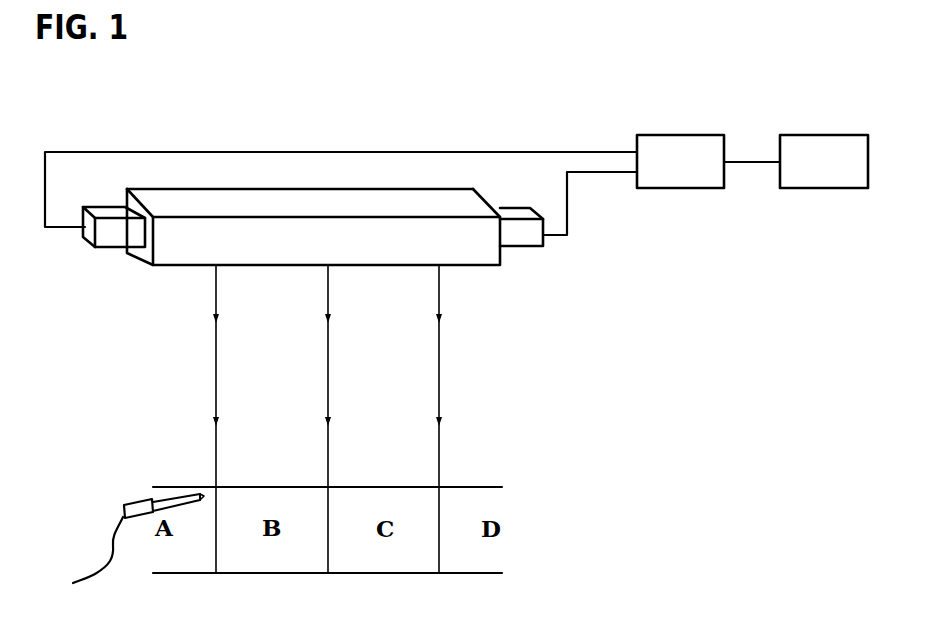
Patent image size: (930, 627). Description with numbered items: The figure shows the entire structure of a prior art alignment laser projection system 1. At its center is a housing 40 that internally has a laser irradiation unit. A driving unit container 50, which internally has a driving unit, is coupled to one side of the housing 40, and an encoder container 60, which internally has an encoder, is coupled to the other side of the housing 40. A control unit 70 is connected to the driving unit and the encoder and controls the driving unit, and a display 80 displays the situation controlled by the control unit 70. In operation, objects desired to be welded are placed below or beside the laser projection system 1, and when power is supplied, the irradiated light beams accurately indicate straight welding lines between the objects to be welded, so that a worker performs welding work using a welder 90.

The laser projection system 1 is at (312, 135).
The housing 40 is at (483, 267).
The driving unit container 50 is at (122, 247).
The encoder container 60 is at (543, 246).
The control unit 70 is at (680, 188).
The display 80 is at (823, 188).
The welder 90 is at (138, 504).